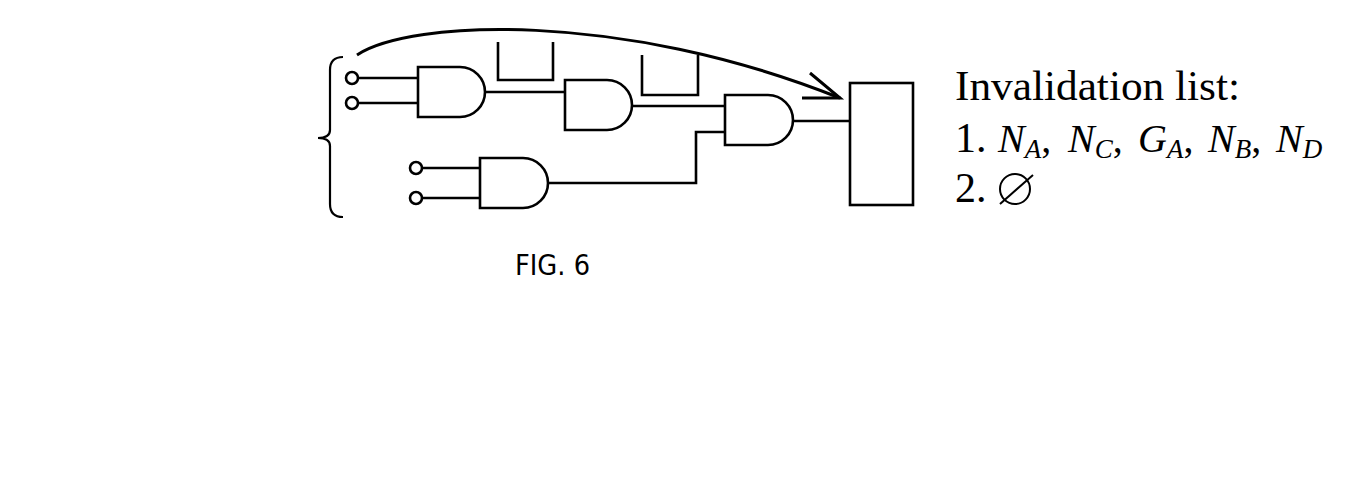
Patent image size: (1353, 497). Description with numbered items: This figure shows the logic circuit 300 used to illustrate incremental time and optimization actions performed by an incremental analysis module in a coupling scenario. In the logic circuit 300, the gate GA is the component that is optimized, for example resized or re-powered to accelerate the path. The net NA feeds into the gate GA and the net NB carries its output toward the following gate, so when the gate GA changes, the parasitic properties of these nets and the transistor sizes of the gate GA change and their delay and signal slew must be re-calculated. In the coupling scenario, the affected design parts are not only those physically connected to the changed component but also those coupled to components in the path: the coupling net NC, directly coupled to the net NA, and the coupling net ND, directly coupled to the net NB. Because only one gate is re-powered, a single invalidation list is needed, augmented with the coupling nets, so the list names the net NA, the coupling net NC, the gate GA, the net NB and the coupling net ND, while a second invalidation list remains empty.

The logic circuit 300 is at (269, 37).
The net NA is at (525, 113).
The coupling net NC is at (525, 61).
The gate GA is at (598, 105).
The net NB is at (678, 124).
The coupling net ND is at (670, 73).